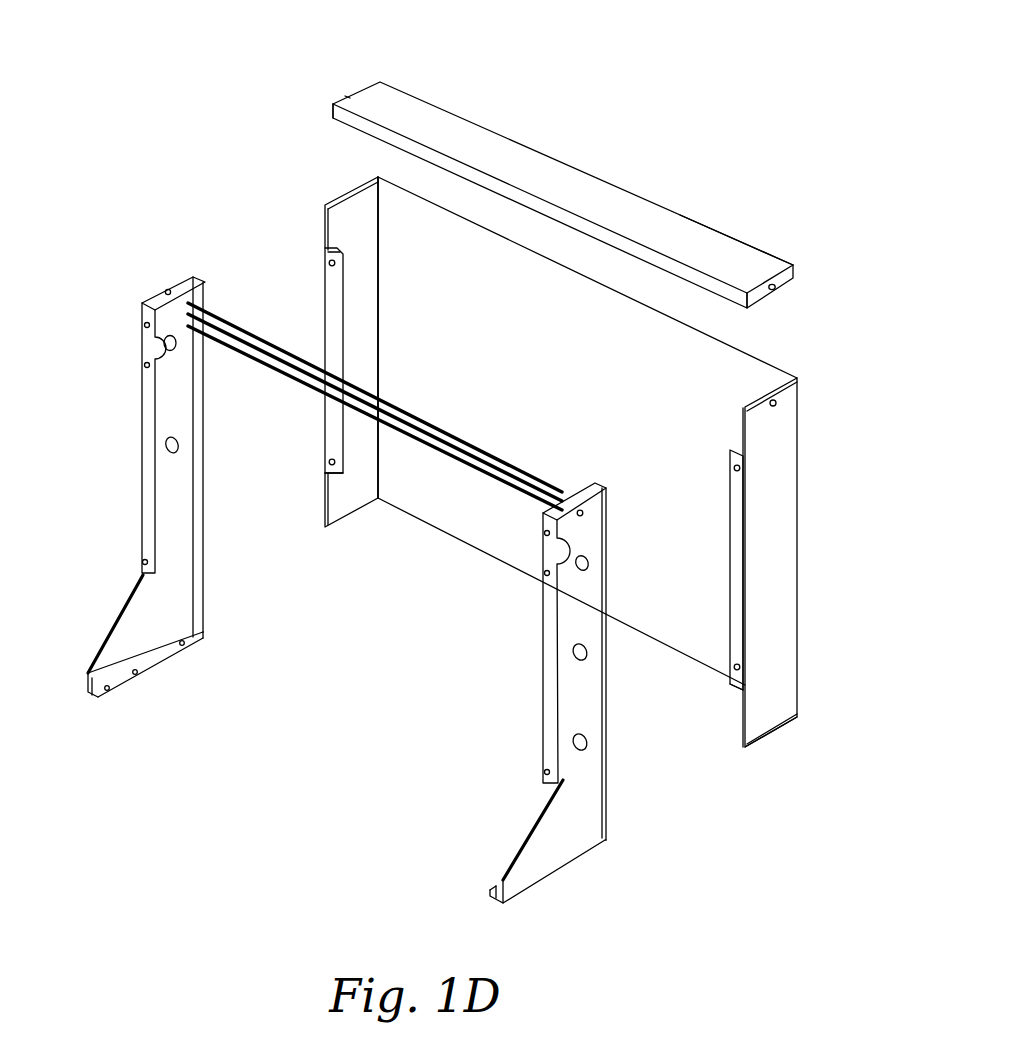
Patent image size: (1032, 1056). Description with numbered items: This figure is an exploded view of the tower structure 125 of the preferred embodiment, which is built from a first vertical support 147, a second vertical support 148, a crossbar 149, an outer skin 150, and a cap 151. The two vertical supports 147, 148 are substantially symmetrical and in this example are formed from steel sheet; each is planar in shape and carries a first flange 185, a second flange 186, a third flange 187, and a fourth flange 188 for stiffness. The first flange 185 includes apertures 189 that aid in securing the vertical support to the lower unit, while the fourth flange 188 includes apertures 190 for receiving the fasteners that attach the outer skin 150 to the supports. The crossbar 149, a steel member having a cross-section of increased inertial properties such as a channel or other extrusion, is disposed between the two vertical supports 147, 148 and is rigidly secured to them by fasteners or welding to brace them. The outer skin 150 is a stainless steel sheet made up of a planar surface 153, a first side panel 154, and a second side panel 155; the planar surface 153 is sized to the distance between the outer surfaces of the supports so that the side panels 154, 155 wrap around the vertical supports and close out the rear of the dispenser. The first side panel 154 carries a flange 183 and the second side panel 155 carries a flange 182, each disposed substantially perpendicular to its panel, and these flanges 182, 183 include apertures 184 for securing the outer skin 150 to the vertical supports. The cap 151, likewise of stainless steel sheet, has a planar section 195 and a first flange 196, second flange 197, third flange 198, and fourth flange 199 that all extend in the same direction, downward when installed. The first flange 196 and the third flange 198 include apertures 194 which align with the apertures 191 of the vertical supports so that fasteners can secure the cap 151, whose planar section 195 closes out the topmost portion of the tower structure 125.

The tower structure 125 is at (697, 158).
The first vertical support 147 is at (138, 505).
The second vertical support 148 is at (592, 815).
The crossbar 149 is at (242, 323).
The outer skin 150 is at (787, 493).
The cap 151 is at (575, 190).
The planar surface 153 is at (518, 408).
The first side panel 154 is at (770, 710).
The second side panel 155 is at (345, 499).
The flange 182 is at (328, 422).
The flange 183 is at (733, 570).
The apertures 184 is at (328, 464).
The first flange 185 is at (163, 655).
The second flange 186 is at (205, 508).
The third flange 187 is at (155, 297).
The fourth flange 188 is at (147, 423).
The apertures 189 is at (181, 643).
The apertures 190 is at (143, 367).
The apertures 191 is at (164, 292).
The apertures 194 is at (347, 96).
The planar section 195 is at (473, 141).
The first flange 196 is at (332, 108).
The second flange 197 is at (720, 229).
The third flange 198 is at (785, 284).
The fourth flange 199 is at (355, 130).